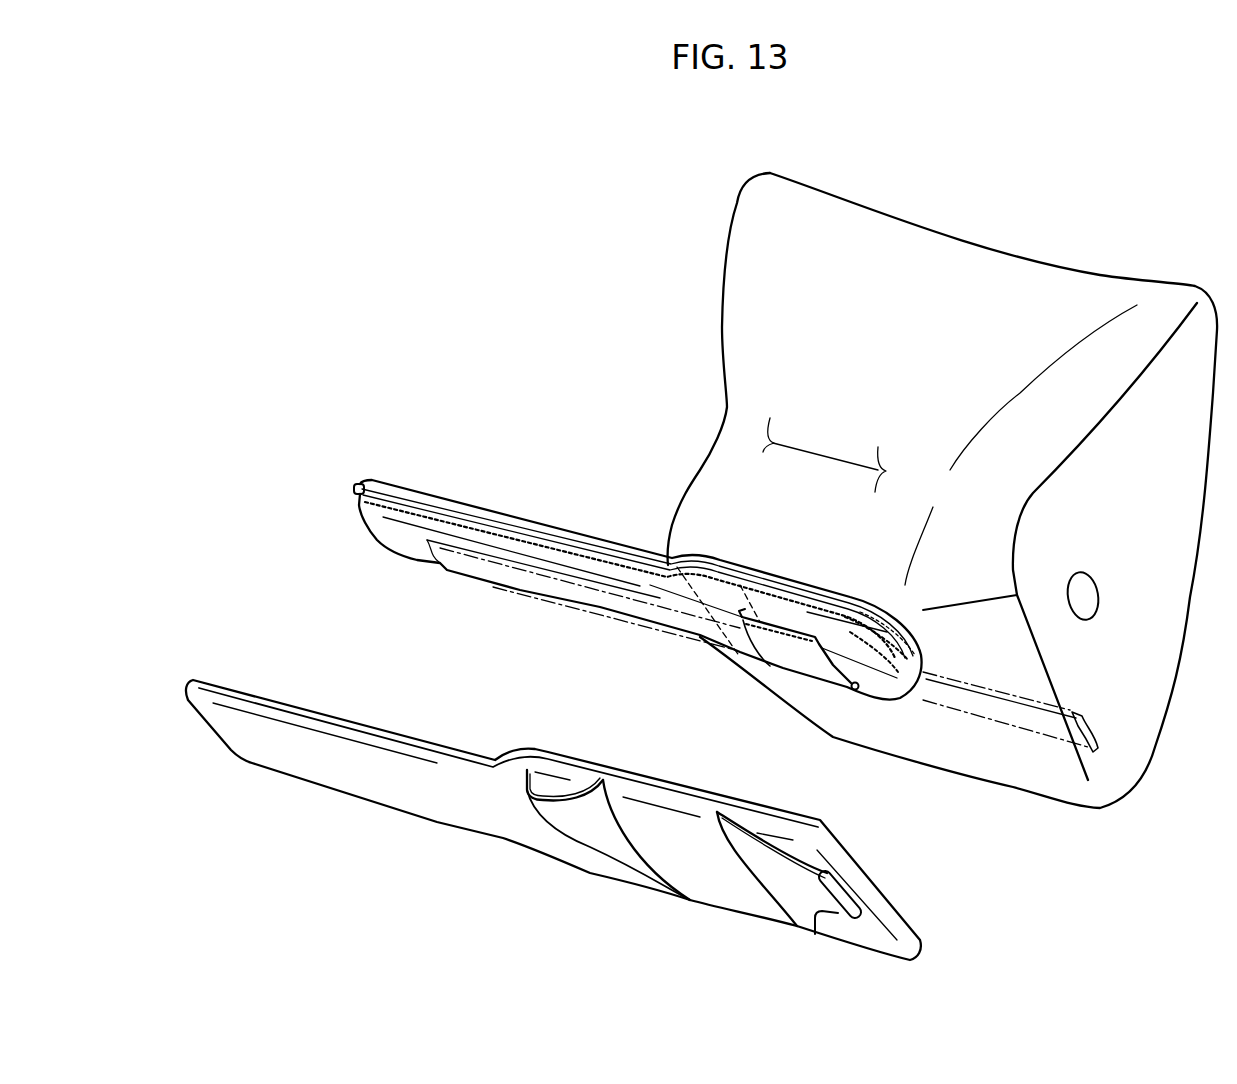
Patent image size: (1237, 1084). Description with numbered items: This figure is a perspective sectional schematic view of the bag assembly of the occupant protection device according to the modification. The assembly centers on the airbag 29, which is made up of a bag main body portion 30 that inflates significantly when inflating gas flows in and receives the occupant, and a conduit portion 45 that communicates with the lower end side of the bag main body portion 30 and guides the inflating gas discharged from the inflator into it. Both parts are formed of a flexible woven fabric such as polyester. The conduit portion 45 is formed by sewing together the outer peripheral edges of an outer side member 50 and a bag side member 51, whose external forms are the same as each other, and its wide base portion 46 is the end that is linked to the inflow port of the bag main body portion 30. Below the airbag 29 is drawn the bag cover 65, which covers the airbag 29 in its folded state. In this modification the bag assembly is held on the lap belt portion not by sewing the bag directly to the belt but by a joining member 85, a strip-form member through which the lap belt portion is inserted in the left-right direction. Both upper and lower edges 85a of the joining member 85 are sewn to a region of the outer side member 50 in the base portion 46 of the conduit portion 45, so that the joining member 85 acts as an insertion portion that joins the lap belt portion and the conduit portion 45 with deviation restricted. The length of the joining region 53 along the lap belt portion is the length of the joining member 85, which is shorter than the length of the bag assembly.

The airbag 29 is at (462, 211).
The bag main body portion 30 is at (702, 271).
The conduit portion 45 is at (503, 490).
The base portion 46 is at (759, 612).
The outer side member 50 is at (398, 534).
The bag side member 51 is at (447, 493).
The joining region 53 is at (803, 652).
The bag cover 65 is at (402, 829).
The joining member 85 is at (780, 647).
The upper and lower edges 85a is at (793, 610).